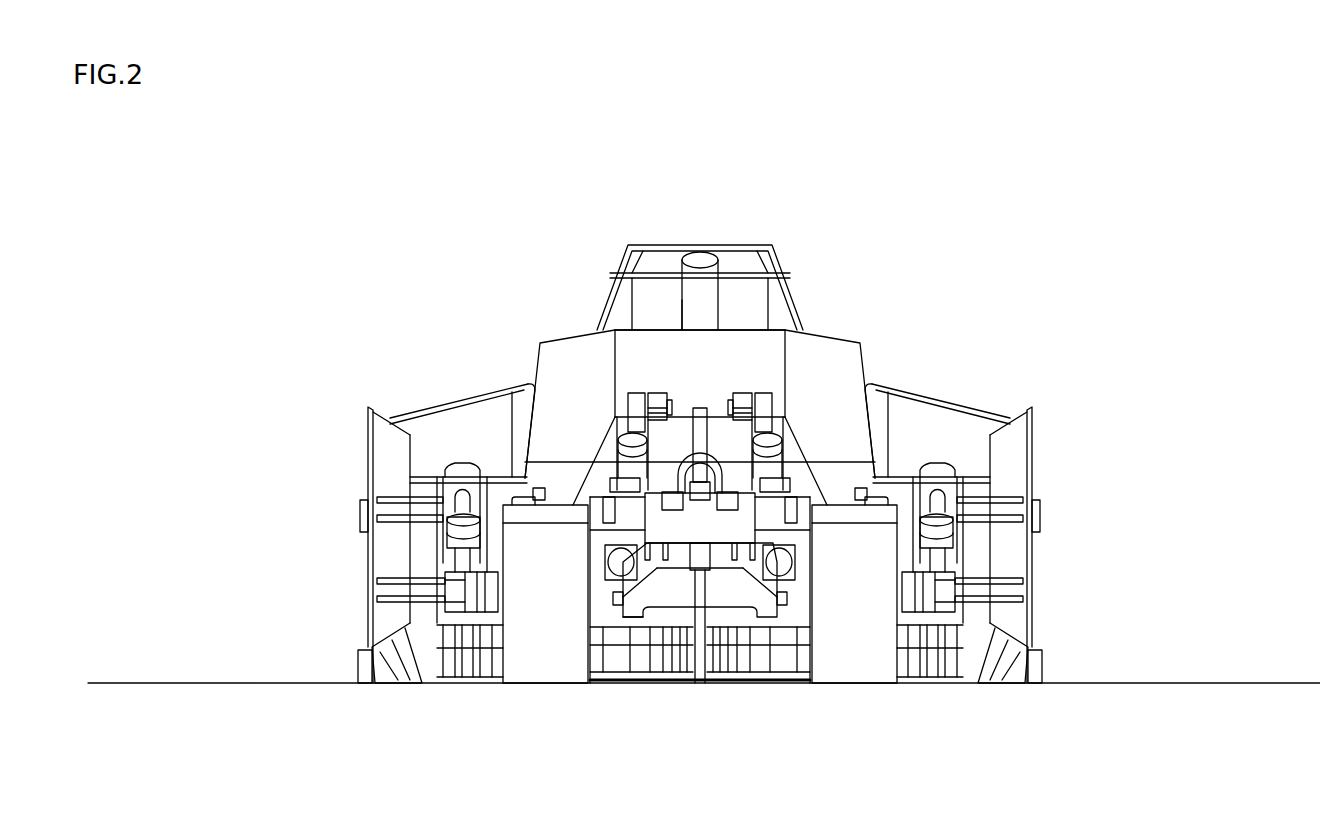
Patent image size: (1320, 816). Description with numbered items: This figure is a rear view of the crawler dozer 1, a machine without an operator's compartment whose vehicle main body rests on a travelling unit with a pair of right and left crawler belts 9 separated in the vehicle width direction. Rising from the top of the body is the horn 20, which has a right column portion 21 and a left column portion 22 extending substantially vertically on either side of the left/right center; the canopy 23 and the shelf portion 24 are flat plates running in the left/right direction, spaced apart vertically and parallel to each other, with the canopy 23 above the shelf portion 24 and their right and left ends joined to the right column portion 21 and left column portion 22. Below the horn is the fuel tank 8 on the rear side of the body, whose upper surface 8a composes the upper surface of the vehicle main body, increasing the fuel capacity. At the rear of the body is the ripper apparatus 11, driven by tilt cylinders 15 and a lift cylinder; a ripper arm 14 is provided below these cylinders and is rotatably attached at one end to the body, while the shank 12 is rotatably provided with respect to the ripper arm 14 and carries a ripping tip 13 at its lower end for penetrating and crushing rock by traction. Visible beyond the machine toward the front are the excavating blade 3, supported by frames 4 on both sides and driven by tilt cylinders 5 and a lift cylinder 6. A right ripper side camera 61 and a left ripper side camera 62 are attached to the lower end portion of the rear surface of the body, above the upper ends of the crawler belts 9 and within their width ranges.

The crawler dozer 1 is at (896, 188).
The excavating blade 3 is at (442, 432).
The frames 4 is at (455, 589).
The tilt cylinders 5 is at (440, 523).
The lift cylinder 6 is at (705, 297).
The fuel tank 8 is at (827, 348).
The upper surface of fuel tank 8a is at (748, 330).
The crawler belts 9 is at (545, 638).
The ripper apparatus 11 is at (663, 620).
The shank 12 is at (700, 612).
The ripping tip 13 is at (698, 673).
The ripper arm 14 is at (763, 606).
The tilt cylinders 15 is at (620, 470).
The horn 20 is at (775, 242).
The right column portion 21 is at (780, 288).
The left column portion 22 is at (618, 288).
The canopy 23 is at (692, 257).
The shelf portion 24 is at (657, 273).
The right ripper side camera 61 is at (861, 502).
The left ripper side camera 62 is at (538, 502).